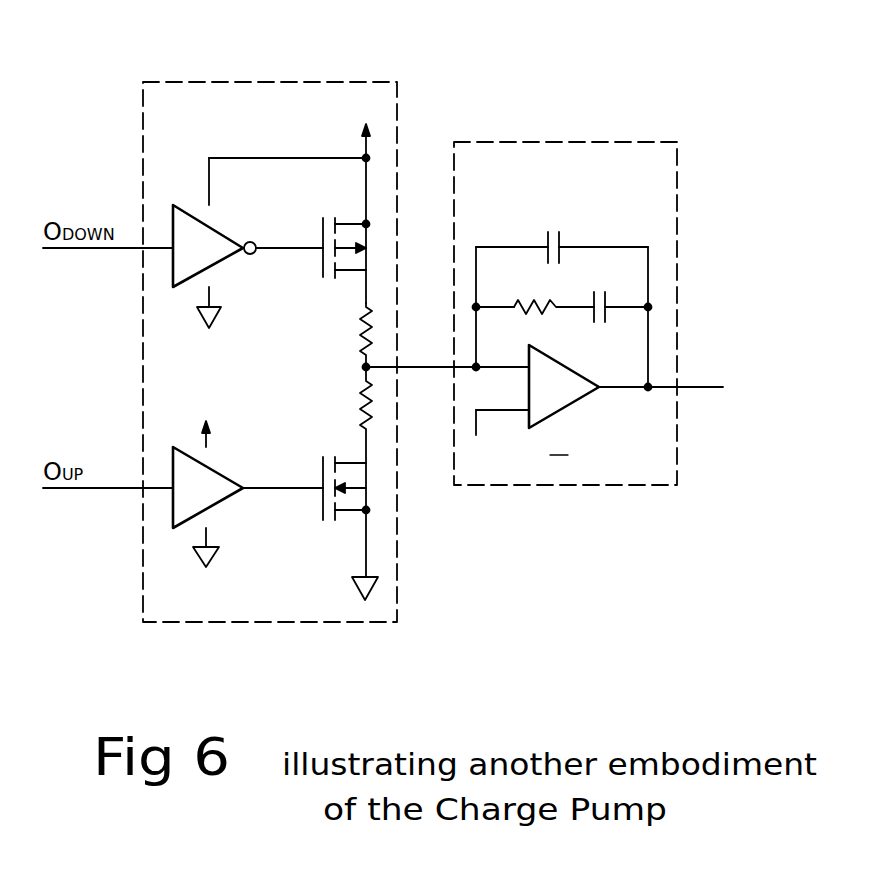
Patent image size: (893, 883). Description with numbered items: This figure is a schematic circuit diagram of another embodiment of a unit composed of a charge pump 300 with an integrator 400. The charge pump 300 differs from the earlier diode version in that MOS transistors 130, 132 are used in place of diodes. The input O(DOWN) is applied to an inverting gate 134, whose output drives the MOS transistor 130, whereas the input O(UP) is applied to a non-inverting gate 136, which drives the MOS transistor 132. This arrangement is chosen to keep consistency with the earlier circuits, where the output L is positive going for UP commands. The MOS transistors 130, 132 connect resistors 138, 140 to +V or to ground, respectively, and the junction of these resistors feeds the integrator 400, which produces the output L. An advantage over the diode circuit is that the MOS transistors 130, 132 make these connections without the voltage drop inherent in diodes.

The charge pump 300 is at (197, 82).
The integrator 400 is at (510, 142).
The MOS transistor 130 is at (320, 266).
The MOS transistor 132 is at (318, 507).
The inverting gate 134 is at (188, 210).
The non-inverting gate 136 is at (182, 444).
The resistor 138 is at (360, 329).
The resistor 140 is at (360, 405).